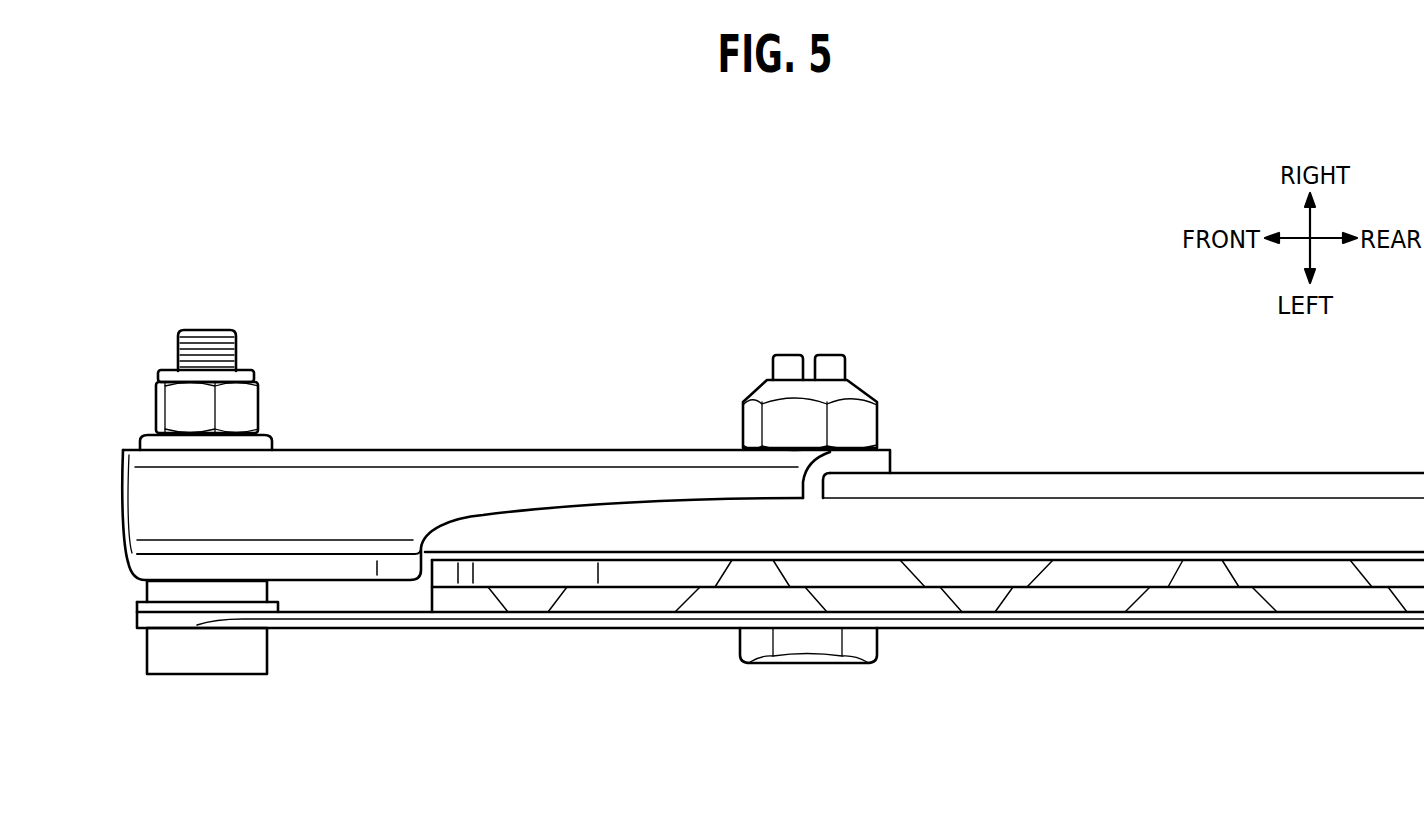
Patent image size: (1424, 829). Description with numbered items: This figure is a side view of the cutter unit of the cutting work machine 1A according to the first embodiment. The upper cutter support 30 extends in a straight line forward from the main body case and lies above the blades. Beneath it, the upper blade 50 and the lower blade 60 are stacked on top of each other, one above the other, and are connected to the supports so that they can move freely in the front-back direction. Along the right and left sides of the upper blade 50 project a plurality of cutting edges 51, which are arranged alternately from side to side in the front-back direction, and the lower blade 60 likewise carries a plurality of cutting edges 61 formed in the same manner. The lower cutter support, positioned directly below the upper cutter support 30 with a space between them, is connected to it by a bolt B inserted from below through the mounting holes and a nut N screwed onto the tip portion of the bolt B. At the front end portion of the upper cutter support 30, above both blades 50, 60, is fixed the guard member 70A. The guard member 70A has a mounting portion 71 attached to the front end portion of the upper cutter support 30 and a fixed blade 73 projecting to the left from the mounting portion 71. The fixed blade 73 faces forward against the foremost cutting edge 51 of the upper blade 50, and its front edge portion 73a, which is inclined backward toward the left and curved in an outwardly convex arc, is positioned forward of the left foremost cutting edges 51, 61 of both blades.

The vehicle body structure / frame assembly 1A is at (610, 292).
The guard member 70A is at (405, 395).
The mounting portion 71 is at (500, 477).
The fixed blade 73 is at (338, 570).
The front edge portion 73a is at (128, 560).
The bolt B is at (227, 353).
The nut N is at (243, 405).
The upper cutter support 30 is at (1100, 485).
The upper blade 50 is at (998, 550).
The cutting edges 51 is at (730, 580).
The cutting edges 61 is at (548, 594).
The lower blade 60 is at (1096, 620).